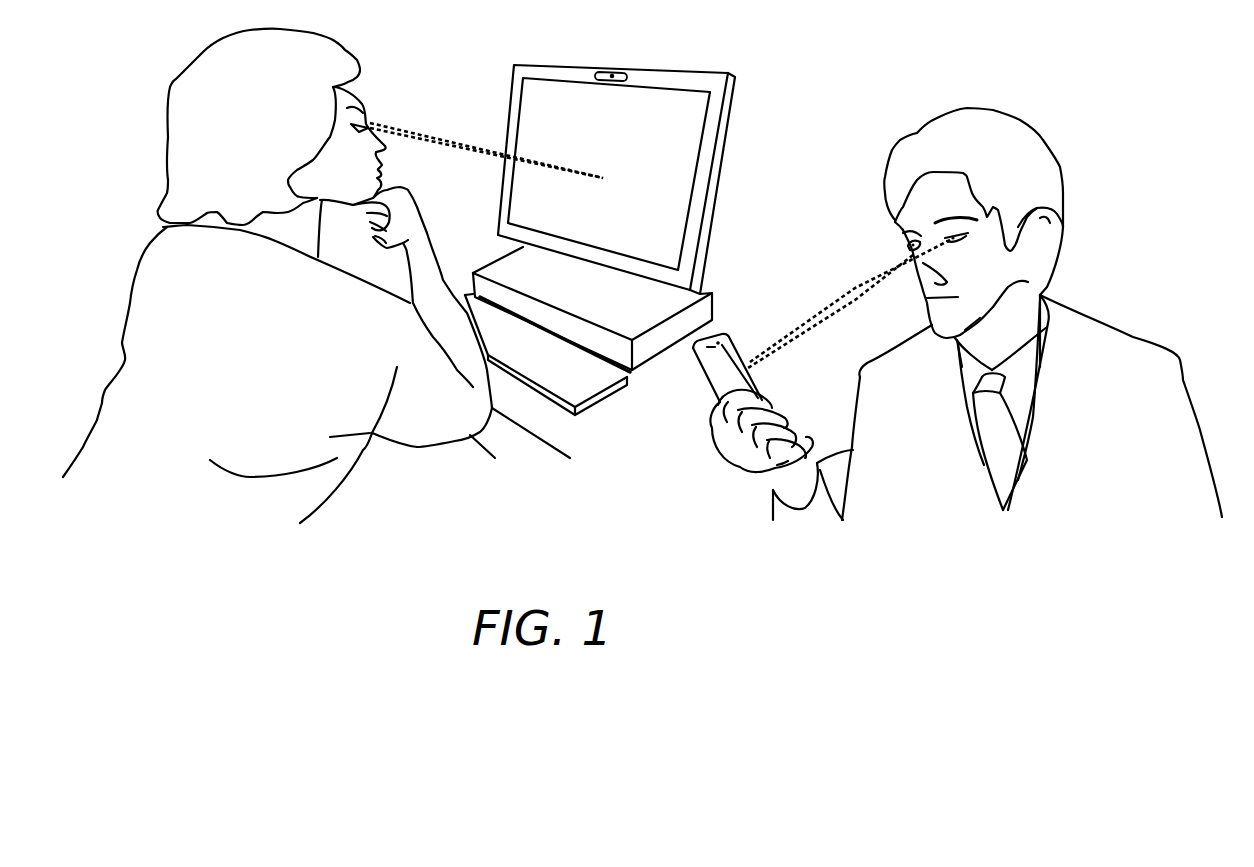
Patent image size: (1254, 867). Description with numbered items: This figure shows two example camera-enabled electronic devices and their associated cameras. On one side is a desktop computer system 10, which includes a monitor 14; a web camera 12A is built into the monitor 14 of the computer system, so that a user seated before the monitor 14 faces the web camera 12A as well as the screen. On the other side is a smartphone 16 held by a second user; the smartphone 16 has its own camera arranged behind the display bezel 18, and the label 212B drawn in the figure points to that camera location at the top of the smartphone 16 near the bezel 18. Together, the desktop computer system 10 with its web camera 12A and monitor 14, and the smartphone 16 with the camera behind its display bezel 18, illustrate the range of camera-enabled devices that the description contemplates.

The desktop computer system 10 is at (756, 182).
The web camera 12A is at (608, 82).
The monitor 14 is at (684, 131).
The camera 212B is at (720, 338).
The smartphone 16 is at (684, 386).
The display bezel 18 is at (750, 368).